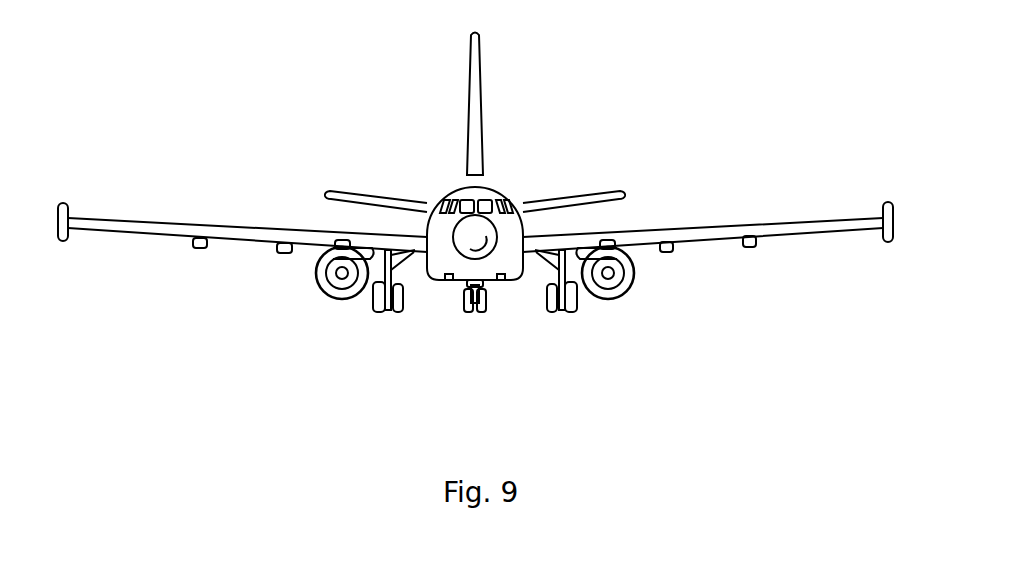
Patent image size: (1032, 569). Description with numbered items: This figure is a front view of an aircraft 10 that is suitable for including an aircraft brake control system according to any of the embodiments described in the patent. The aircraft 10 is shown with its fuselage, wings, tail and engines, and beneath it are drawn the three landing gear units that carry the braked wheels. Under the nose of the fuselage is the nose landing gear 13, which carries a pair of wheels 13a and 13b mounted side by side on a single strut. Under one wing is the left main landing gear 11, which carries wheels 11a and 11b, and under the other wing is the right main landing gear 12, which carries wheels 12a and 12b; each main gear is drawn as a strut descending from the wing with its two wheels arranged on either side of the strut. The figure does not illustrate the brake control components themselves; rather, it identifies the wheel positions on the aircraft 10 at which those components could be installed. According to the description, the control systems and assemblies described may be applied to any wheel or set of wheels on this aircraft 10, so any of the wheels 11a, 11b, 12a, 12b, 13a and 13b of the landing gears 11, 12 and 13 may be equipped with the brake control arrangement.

The aircraft 10 is at (267, 83).
The left main landing gear 11 is at (729, 386).
The wheel 11a is at (578, 305).
The wheel 11b is at (553, 310).
The right main landing gear 12 is at (284, 357).
The wheel 12a is at (395, 313).
The wheel 12b is at (373, 293).
The nose landing gear 13 is at (497, 367).
The wheel 13a is at (487, 307).
The wheel 13b is at (467, 313).